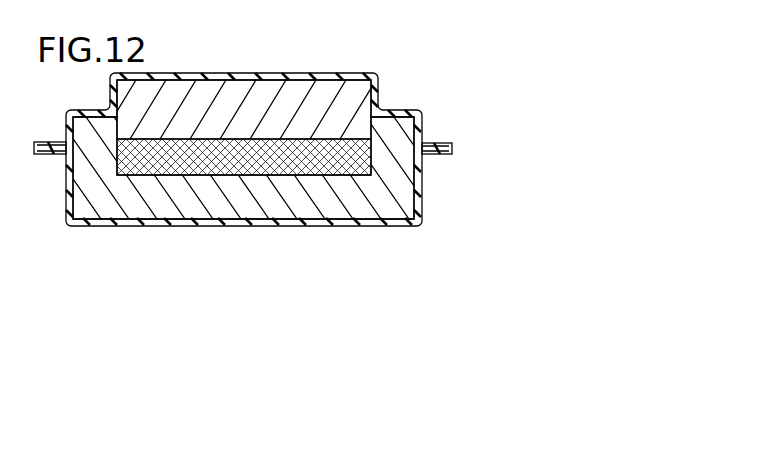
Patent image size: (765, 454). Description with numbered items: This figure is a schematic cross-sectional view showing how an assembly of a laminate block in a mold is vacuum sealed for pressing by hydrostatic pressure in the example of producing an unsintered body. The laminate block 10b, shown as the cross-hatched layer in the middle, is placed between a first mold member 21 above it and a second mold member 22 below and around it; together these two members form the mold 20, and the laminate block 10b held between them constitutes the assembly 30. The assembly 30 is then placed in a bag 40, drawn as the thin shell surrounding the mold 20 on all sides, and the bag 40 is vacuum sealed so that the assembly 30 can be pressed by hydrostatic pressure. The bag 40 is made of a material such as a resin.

The laminate block 10b is at (272, 157).
The mold 20 is at (233, 206).
The first mold member 21 is at (217, 125).
The second mold member 22 is at (208, 287).
The assembly 30 is at (233, 229).
The bag 40 is at (397, 224).